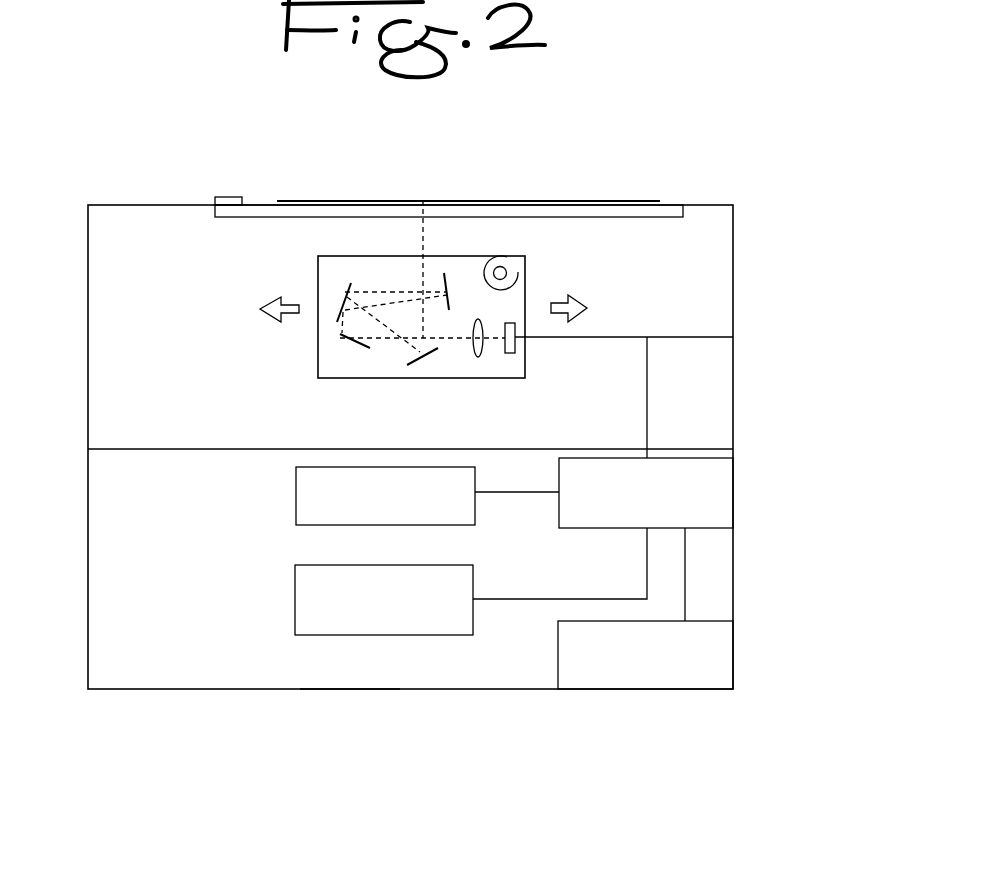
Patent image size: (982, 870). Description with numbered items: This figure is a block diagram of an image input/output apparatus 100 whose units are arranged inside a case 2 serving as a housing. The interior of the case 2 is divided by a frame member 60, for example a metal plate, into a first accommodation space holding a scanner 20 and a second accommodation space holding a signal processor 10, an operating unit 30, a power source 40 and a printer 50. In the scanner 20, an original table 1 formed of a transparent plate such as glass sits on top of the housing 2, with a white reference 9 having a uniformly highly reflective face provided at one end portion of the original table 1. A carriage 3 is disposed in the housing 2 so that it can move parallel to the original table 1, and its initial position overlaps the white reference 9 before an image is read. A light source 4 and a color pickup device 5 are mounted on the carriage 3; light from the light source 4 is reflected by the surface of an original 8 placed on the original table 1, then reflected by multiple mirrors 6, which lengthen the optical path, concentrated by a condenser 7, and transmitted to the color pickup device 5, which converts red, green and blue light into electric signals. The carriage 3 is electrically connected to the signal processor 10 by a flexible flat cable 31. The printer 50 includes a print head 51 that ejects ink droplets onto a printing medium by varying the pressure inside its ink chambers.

The original table 1 is at (646, 207).
The case 2 is at (735, 233).
The carriage 3 is at (370, 378).
The light source 4 is at (517, 273).
The color pickup device 5 is at (515, 353).
The mirrors 6 is at (342, 312).
The condenser 7 is at (478, 352).
The original 8 is at (308, 203).
The white reference 9 is at (226, 200).
The signal processor 10 is at (733, 485).
The scanner 20 is at (733, 350).
The operating unit 30 is at (296, 485).
The flexible flat cable 31 is at (632, 335).
The power source 40 is at (733, 642).
The printer 50 is at (345, 690).
The print head 51 is at (392, 635).
The frame member 60 is at (205, 451).
The image input/output apparatus 100 is at (716, 184).